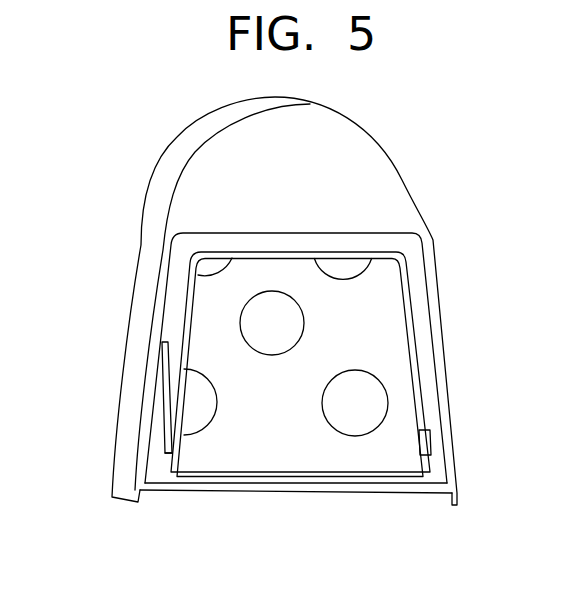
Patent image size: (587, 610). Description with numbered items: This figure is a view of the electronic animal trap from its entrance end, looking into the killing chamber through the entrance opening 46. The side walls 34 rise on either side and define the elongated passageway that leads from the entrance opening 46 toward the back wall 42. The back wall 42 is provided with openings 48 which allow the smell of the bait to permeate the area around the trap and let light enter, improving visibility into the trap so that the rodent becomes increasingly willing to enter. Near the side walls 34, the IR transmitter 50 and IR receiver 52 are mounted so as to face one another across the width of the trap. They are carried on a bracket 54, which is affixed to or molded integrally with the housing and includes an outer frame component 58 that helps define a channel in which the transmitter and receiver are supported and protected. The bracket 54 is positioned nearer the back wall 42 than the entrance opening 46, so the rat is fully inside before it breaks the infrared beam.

The side walls 34 is at (150, 292).
The back wall 42 is at (383, 340).
The entrance opening 46 is at (320, 490).
The openings 48 is at (270, 308).
The IR transmitter 50 is at (177, 448).
The IR receiver 52 is at (421, 443).
The bracket 54 is at (178, 313).
The outer frame component 58 is at (415, 247).